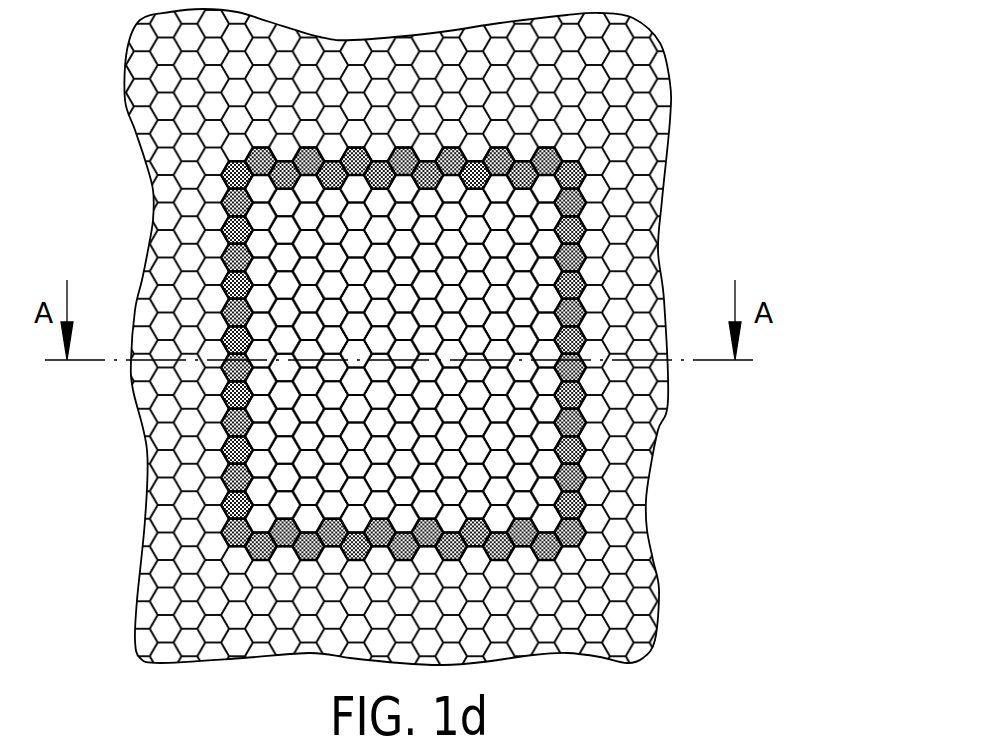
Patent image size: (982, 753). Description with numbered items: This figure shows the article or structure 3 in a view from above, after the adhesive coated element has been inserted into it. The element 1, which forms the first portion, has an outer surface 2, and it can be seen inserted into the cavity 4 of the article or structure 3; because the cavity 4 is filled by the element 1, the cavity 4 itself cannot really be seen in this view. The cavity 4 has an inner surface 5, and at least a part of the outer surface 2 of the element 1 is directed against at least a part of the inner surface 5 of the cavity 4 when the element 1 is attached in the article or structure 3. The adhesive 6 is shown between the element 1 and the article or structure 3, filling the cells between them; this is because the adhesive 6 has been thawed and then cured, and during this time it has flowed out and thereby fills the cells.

The element 1 is at (353, 267).
The outer surface 2 is at (337, 517).
The article or structure 3 is at (731, 90).
The cavity 4 is at (588, 223).
The inner surface 5 is at (588, 278).
The adhesive 6 is at (588, 472).